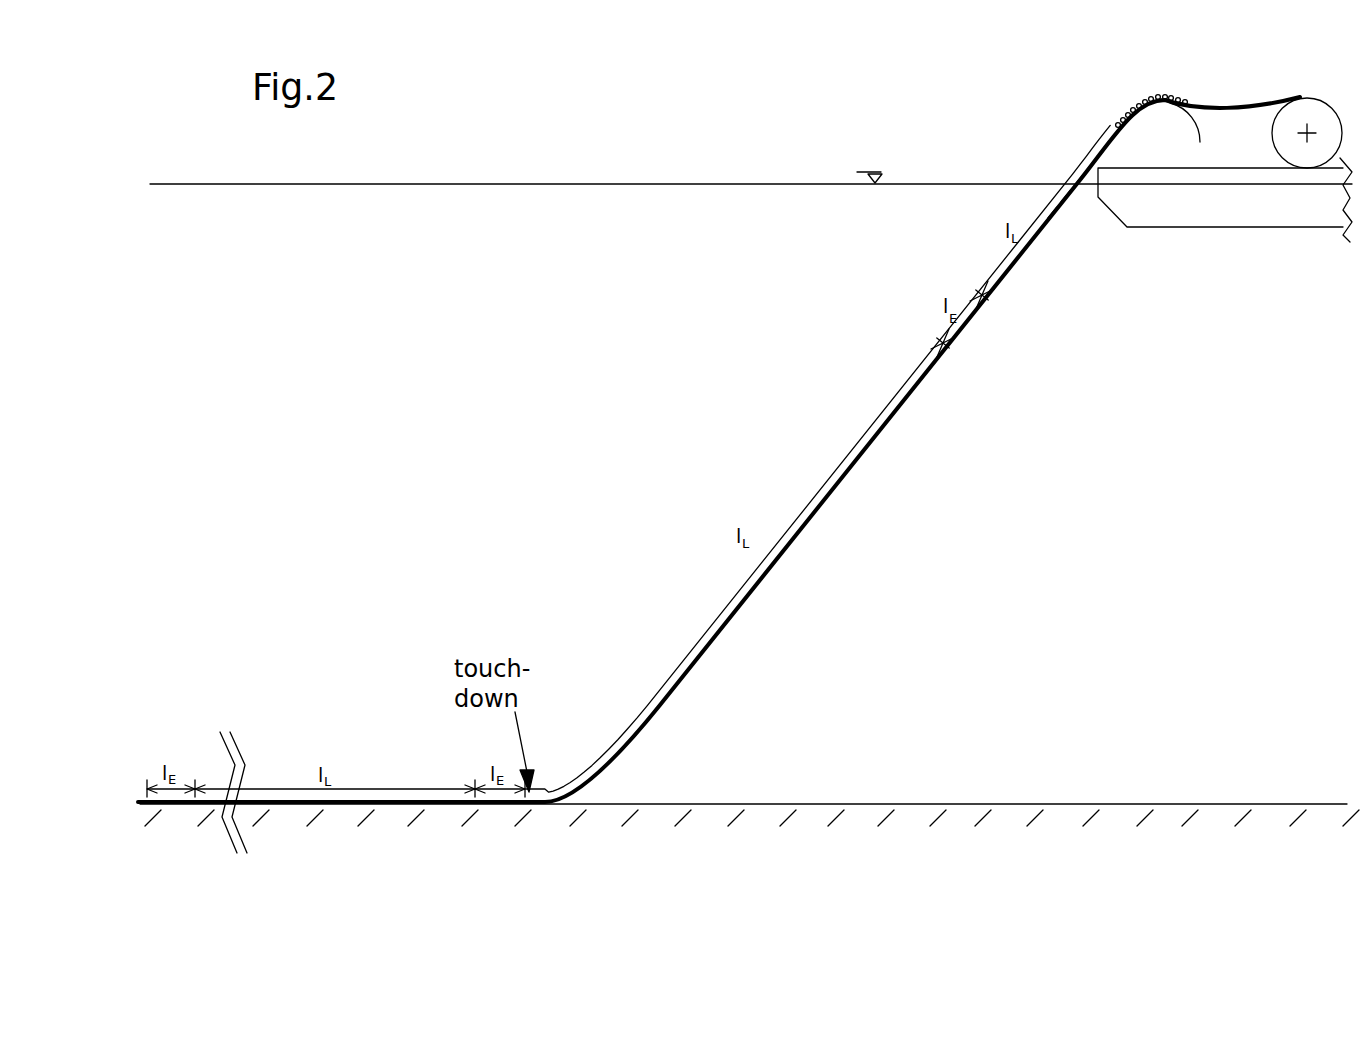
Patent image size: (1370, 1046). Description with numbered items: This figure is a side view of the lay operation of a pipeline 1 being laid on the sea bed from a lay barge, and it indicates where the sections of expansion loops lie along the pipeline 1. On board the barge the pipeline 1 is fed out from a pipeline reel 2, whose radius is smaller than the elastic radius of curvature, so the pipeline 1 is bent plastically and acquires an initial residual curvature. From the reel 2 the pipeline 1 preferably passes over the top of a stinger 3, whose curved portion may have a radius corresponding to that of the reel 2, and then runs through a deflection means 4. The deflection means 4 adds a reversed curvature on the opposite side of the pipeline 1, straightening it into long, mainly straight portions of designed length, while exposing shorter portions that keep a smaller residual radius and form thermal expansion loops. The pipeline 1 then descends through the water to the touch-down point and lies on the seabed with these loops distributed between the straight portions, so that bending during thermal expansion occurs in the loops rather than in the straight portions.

The pipeline 1 is at (280, 791).
The pipeline reel 2 is at (1315, 98).
The stinger 3 is at (1155, 108).
The deflection means 4 is at (1103, 128).